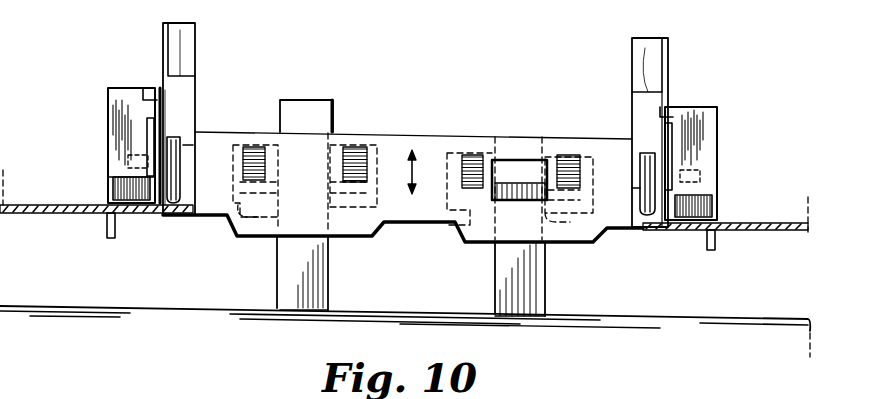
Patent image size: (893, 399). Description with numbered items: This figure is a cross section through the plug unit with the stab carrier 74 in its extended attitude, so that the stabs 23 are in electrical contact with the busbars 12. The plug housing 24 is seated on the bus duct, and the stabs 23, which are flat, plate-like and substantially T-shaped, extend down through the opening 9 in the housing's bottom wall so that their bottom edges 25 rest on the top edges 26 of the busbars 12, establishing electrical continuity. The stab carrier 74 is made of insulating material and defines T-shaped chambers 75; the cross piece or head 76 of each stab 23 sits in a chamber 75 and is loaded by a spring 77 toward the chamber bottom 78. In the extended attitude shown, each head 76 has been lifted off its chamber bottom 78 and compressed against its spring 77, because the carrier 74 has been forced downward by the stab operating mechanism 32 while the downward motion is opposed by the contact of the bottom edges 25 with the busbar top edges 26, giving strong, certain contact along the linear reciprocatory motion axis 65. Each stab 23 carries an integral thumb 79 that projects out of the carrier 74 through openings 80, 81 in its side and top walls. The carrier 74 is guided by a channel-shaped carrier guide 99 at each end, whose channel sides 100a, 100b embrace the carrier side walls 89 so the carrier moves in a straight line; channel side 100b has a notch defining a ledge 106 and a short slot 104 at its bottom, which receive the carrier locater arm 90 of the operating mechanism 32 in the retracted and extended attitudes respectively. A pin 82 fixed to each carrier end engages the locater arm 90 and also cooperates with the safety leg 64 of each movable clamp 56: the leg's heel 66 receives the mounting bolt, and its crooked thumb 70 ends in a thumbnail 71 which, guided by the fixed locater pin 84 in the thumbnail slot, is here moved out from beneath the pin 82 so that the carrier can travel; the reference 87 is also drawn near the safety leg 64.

The opening 9 is at (647, 232).
The busbars 12 is at (396, 322).
The stabs 23 is at (285, 272).
The plug housing 24 is at (27, 213).
The bottom edges 25 is at (301, 313).
The top edges 26 is at (448, 316).
The stab operating mechanism 32 is at (145, 65).
The movable clamps 56 is at (112, 238).
The safety leg 64 is at (108, 97).
The linear reciprocatory motion axis 65 is at (418, 174).
The heel 66 is at (113, 185).
The crooked thumb 70 is at (80, 132).
The thumbnail 71 is at (147, 92).
The stab carrier 74 is at (402, 125).
The T-shaped chambers 75 is at (236, 131).
The head 76 is at (465, 227).
The spring 77 is at (343, 165).
The bottom 78 is at (244, 215).
The thumb 79 is at (517, 190).
The opening 80 is at (513, 160).
The opening 81 is at (347, 131).
The pin 82 is at (130, 163).
The fixed locater pin 84 is at (158, 143).
The guide surface 87 is at (127, 105).
The side walls 89 is at (202, 190).
The carrier locater arm 90 is at (170, 197).
The carrier guide 99 is at (163, 28).
The channel side 100a is at (188, 35).
The channel side 100b is at (160, 128).
The short slot 104 is at (183, 148).
The ledge 106 is at (180, 75).